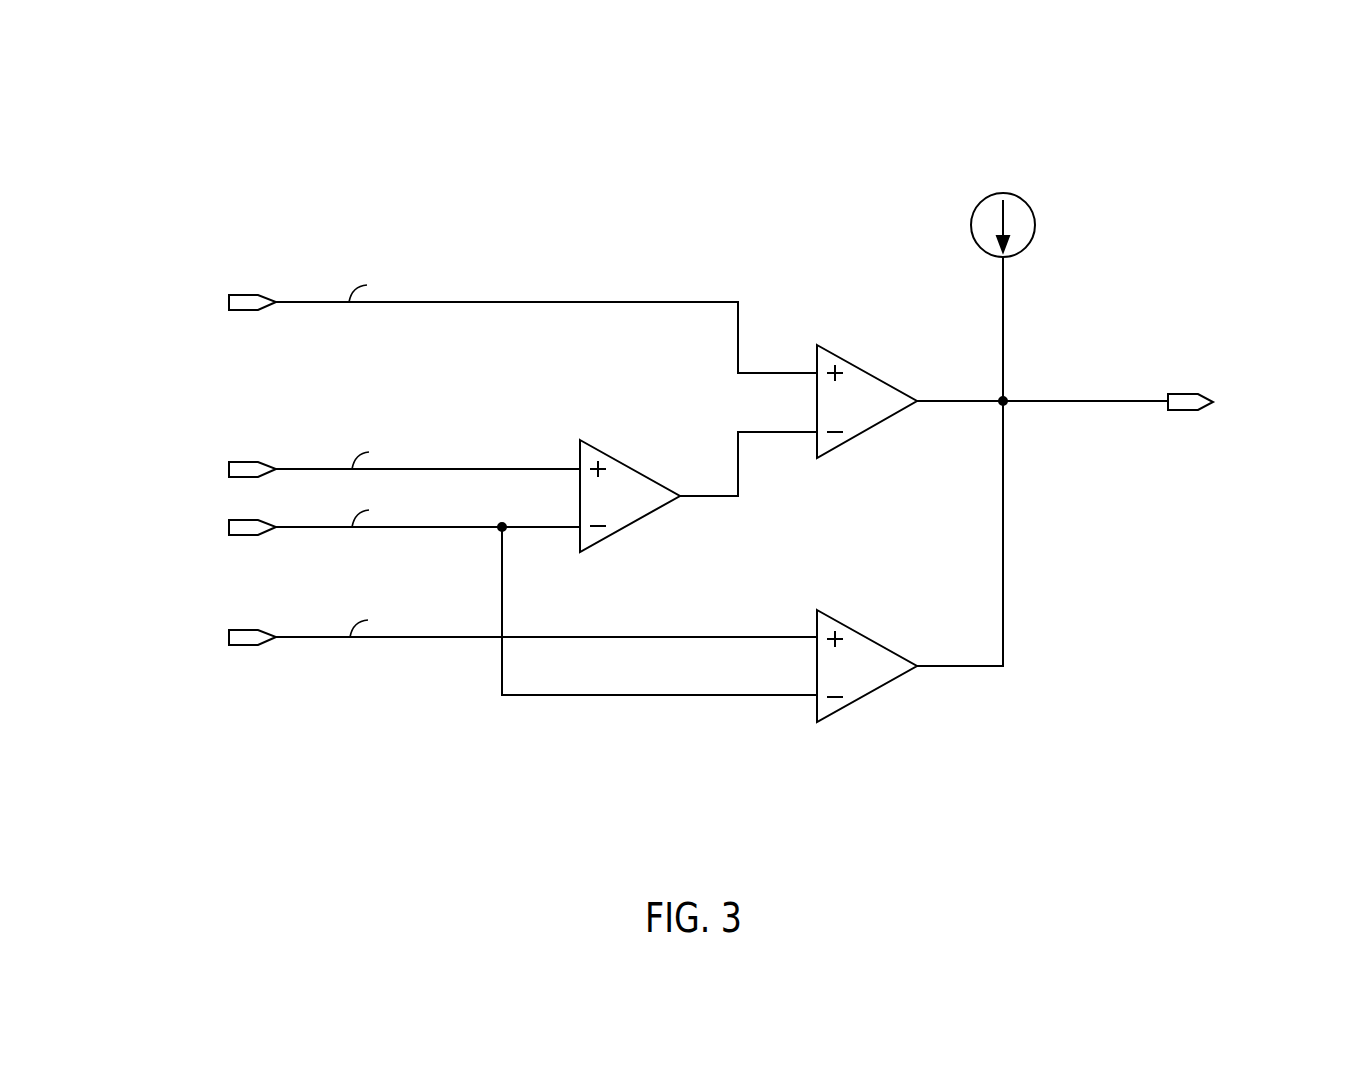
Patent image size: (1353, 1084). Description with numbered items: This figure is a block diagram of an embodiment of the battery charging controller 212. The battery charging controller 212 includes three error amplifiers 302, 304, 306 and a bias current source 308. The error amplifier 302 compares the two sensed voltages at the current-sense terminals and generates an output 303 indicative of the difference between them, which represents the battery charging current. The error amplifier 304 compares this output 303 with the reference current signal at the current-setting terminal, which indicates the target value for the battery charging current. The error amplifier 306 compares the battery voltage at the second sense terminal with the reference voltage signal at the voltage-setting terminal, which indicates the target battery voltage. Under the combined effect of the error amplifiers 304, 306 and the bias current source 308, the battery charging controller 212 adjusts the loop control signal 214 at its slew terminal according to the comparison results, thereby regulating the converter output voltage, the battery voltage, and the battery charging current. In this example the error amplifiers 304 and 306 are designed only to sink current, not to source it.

The battery charging controller 212 is at (212, 149).
The loop control signal 214 is at (1067, 402).
The error amplifier 302 is at (630, 463).
The output 303 is at (707, 497).
The error amplifier 304 is at (868, 370).
The error amplifier 306 is at (865, 635).
The bias current source 308 is at (1028, 200).